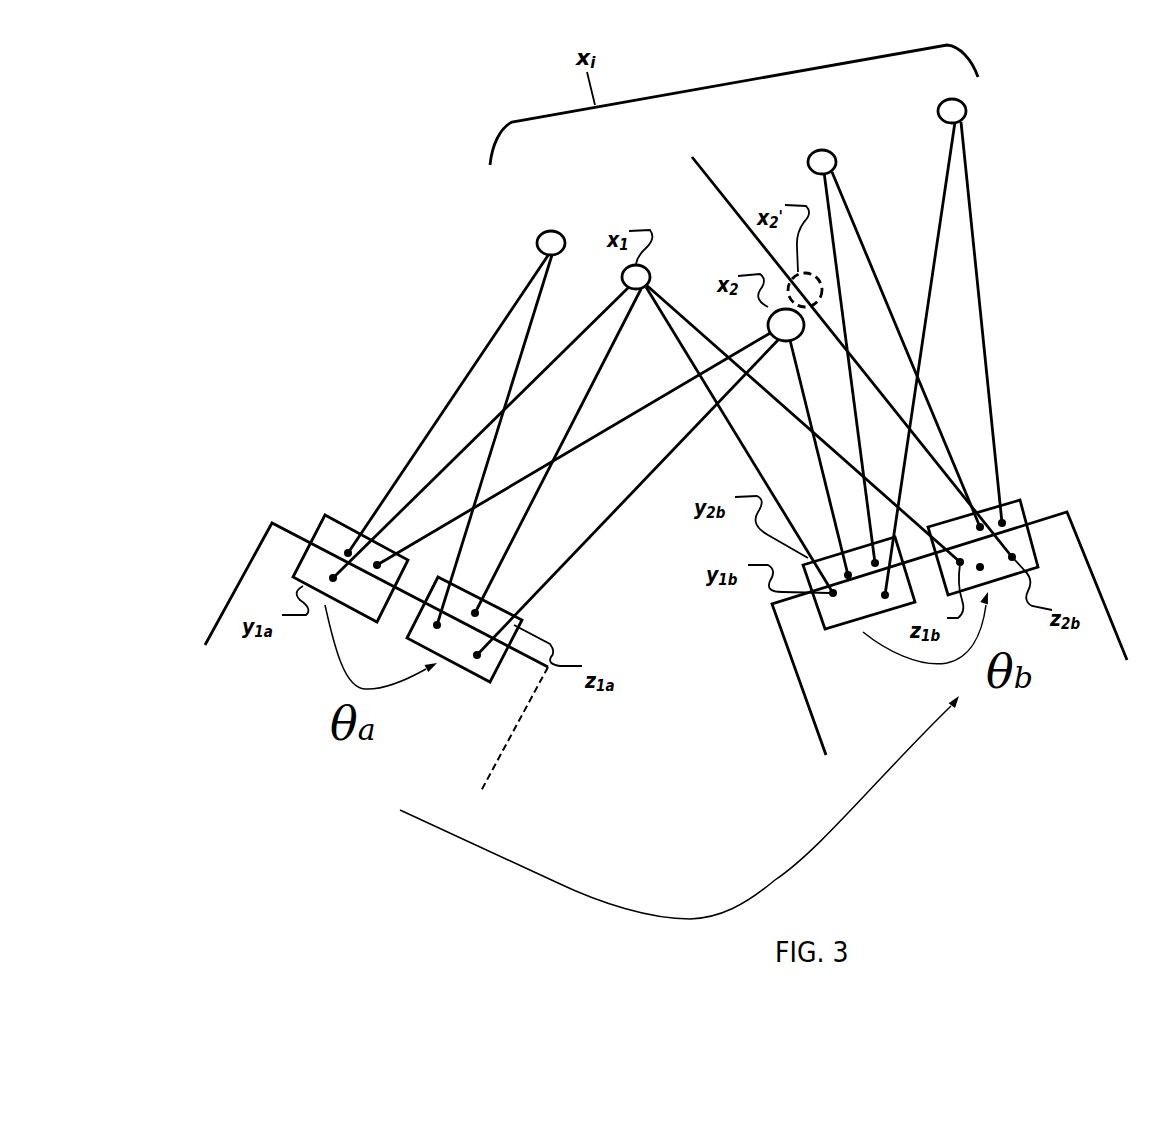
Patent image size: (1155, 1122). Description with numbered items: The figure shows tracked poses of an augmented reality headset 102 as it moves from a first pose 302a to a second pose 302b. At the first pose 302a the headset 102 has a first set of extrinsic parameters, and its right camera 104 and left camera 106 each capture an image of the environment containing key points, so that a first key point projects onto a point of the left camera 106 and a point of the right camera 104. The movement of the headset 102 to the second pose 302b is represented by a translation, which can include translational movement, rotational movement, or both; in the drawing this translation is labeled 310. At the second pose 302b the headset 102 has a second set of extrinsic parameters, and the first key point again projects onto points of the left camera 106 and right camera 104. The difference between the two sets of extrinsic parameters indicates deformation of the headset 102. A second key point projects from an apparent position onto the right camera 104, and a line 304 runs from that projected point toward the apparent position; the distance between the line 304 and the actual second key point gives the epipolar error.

The augmented reality headset 102 is at (227, 537).
The right camera 104 is at (473, 681).
The left camera 106 is at (322, 530).
The first pose 302a is at (356, 637).
The second pose 302b is at (1054, 735).
The line 304 is at (722, 186).
The translation T of sensor assembly 310 is at (657, 812).